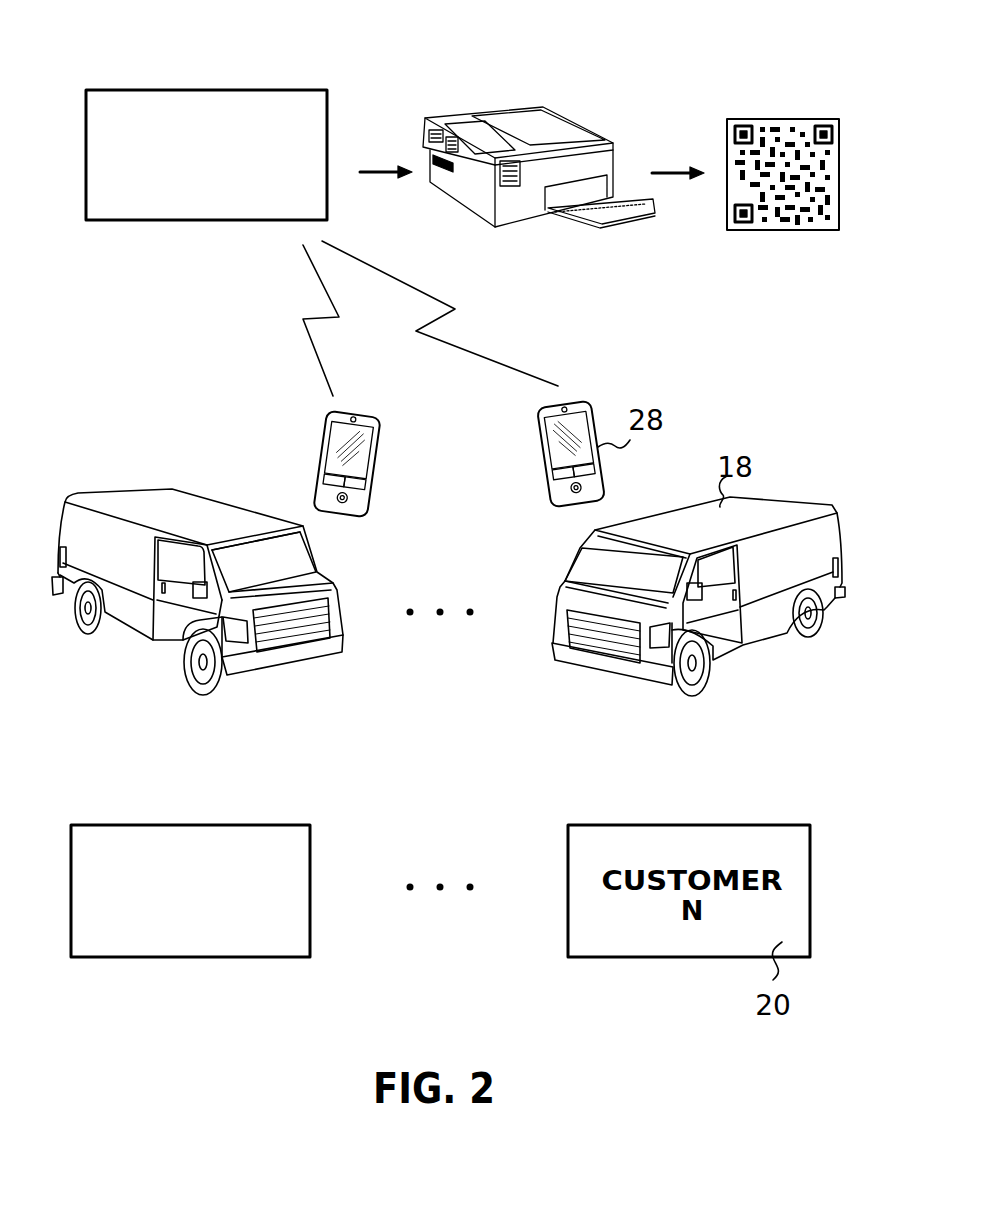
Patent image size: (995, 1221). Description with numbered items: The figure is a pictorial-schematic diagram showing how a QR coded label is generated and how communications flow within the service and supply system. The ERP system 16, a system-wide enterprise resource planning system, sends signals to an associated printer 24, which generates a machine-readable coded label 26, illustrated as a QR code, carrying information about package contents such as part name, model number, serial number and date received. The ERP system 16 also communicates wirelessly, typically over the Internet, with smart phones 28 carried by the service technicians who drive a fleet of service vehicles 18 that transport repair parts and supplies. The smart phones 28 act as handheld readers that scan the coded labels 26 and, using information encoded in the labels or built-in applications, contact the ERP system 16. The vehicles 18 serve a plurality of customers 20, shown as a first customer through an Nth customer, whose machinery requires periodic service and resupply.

The ERP system 16 is at (108, 105).
The printer 24 is at (440, 117).
The coded label 26 is at (785, 222).
The smart phone 28 is at (382, 456).
The vehicle 18 is at (175, 498).
The customer 20 is at (270, 942).